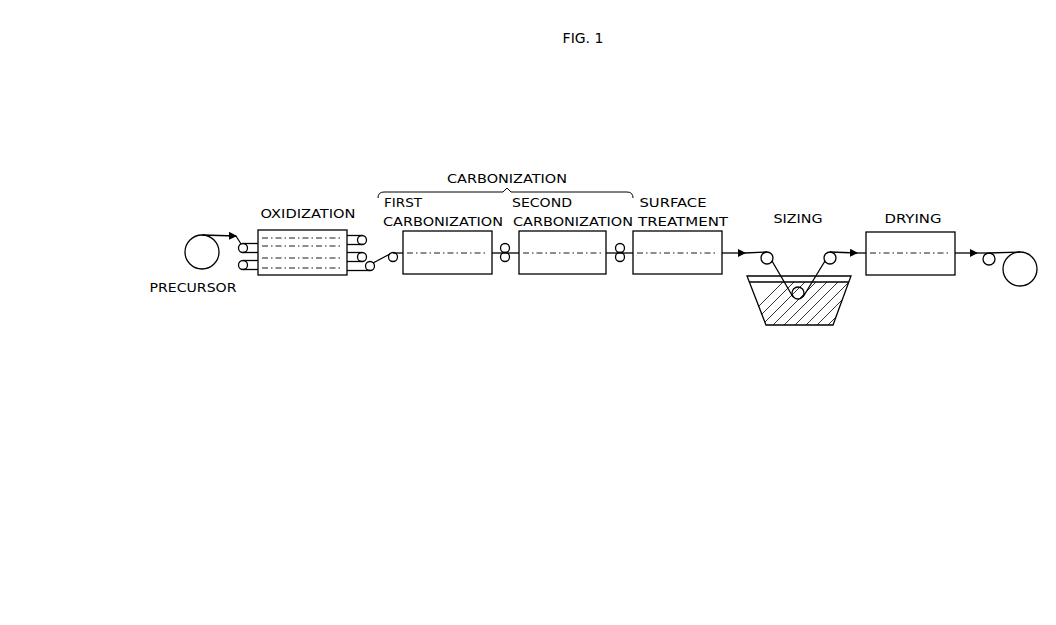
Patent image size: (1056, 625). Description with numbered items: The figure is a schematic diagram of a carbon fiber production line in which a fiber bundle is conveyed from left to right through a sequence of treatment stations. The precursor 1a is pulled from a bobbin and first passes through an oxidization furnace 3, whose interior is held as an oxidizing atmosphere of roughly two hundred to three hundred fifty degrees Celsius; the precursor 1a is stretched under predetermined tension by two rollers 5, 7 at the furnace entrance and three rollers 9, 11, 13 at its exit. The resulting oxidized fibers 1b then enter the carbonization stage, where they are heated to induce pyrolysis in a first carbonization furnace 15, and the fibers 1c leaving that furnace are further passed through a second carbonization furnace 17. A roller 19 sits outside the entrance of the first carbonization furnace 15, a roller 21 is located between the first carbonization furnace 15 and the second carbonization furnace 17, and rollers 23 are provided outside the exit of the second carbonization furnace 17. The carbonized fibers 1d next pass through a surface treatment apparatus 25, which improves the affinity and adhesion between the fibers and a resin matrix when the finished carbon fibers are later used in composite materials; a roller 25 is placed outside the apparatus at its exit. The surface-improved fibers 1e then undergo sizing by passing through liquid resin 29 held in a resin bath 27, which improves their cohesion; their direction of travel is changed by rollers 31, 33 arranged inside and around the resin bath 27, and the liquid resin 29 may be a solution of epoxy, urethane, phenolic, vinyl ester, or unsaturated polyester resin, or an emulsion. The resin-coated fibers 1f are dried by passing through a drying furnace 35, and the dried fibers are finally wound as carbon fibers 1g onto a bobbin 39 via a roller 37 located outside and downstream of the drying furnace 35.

The precursor 1a is at (221, 234).
The oxidized fibers 1b is at (384, 262).
The fibers that have passed through the first carbonization furnace 1c is at (512, 255).
The carbonized fibers 1d is at (613, 255).
The surface-improved fibers 1e is at (735, 250).
The resin-coated fibers 1f is at (849, 250).
The carbon fibers 1g is at (964, 250).
The oxidization furnace 3 is at (303, 275).
The roller 5 is at (241, 243).
The roller 7 is at (243, 270).
The roller 9 is at (365, 236).
The roller 11 is at (366, 253).
The roller 13 is at (371, 271).
The first carbonization furnace 15 is at (448, 275).
The second carbonization furnace 17 is at (563, 275).
The roller 19 is at (396, 262).
The roller 21 is at (505, 262).
The rollers 23 is at (622, 262).
The surface treatment apparatus 25 is at (680, 275).
The resin bath 27 is at (789, 325).
The liquid resin 29 is at (814, 306).
The roller 31 is at (757, 300).
The roller 33 is at (827, 253).
The drying furnace 35 is at (913, 275).
The roller 37 is at (994, 253).
The bobbin 39 is at (1020, 286).